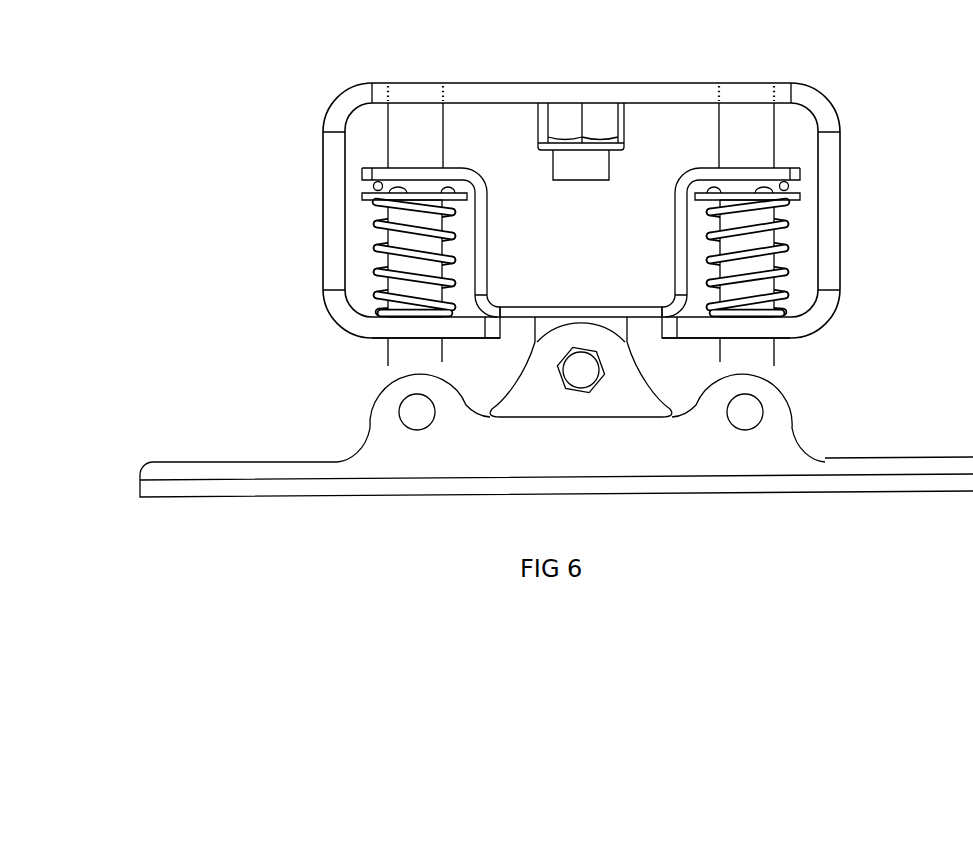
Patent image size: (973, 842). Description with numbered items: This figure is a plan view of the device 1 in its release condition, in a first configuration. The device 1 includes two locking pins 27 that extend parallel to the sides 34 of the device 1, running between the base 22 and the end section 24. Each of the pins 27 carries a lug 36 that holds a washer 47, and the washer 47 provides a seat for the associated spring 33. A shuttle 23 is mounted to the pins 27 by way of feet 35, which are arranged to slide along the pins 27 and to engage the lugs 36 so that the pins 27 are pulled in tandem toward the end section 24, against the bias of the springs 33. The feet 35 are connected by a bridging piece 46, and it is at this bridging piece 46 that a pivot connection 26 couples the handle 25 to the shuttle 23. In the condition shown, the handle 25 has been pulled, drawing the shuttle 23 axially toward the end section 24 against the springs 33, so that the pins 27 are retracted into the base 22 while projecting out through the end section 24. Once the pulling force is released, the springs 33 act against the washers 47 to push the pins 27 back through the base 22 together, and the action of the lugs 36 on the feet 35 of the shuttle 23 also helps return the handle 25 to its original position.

The device 1 is at (330, 107).
The base 22 is at (660, 83).
The shuttle 23 is at (513, 305).
The end section 24 is at (783, 338).
The handle 25 is at (860, 458).
The pivot connection 26 is at (597, 378).
The locking pins 27 is at (762, 127).
The spring 33 is at (777, 250).
The sides 34 is at (842, 148).
The feet 35 is at (707, 165).
The lug 36 is at (717, 182).
The bridging piece 46 is at (580, 305).
The washer 47 is at (705, 193).